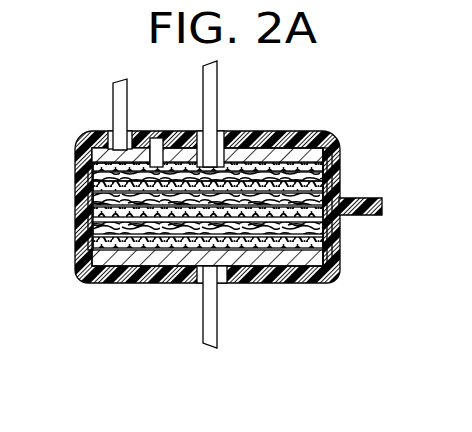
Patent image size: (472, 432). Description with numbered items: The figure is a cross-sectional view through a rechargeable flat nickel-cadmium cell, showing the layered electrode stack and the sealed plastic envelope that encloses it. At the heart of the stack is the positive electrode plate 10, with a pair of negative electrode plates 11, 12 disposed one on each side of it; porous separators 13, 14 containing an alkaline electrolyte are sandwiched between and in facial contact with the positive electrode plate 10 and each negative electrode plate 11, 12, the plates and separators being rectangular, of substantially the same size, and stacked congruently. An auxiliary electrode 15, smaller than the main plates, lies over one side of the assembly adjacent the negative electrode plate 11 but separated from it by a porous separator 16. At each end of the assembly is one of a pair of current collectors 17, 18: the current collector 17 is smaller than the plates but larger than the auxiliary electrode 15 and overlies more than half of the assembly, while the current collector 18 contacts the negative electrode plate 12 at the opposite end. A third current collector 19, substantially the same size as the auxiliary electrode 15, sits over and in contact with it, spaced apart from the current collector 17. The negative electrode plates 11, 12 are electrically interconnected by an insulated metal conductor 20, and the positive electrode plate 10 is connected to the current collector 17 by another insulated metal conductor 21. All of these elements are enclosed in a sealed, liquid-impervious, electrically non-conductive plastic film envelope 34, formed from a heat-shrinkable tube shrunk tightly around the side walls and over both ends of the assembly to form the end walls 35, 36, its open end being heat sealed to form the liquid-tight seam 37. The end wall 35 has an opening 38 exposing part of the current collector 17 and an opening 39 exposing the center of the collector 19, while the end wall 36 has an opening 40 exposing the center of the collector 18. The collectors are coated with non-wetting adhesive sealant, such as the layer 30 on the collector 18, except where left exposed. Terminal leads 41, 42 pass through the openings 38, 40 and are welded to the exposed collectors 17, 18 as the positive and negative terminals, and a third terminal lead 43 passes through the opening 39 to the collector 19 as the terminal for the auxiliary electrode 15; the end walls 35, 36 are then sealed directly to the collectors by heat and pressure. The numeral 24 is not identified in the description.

The positive electrode plate 10 is at (322, 216).
The negative electrode plate 11 is at (322, 192).
The negative electrode plate 12 is at (330, 246).
The porous separator 13 is at (350, 207).
The porous separator 14 is at (322, 228).
The auxiliary electrode 15 is at (92, 163).
The porous separator 16 is at (93, 174).
The current collector 17 is at (298, 158).
The current collector 18 is at (113, 284).
The third current collector 19 is at (133, 132).
The insulated metal conductor 20 is at (90, 208).
The insulated metal conductor 21 is at (333, 160).
The casing top portion 24 is at (245, 140).
The layer of non-wetting adhesive sealant 30 is at (315, 284).
The plastic film envelope 34 is at (82, 245).
The end wall 35 is at (190, 138).
The end wall 36 is at (176, 284).
The liquid-tight seam 37 is at (384, 204).
The opening 38 is at (222, 140).
The opening 39 is at (114, 136).
The opening 40 is at (222, 276).
The terminal lead 41 is at (203, 64).
The terminal lead 42 is at (203, 340).
The third terminal lead 43 is at (112, 82).